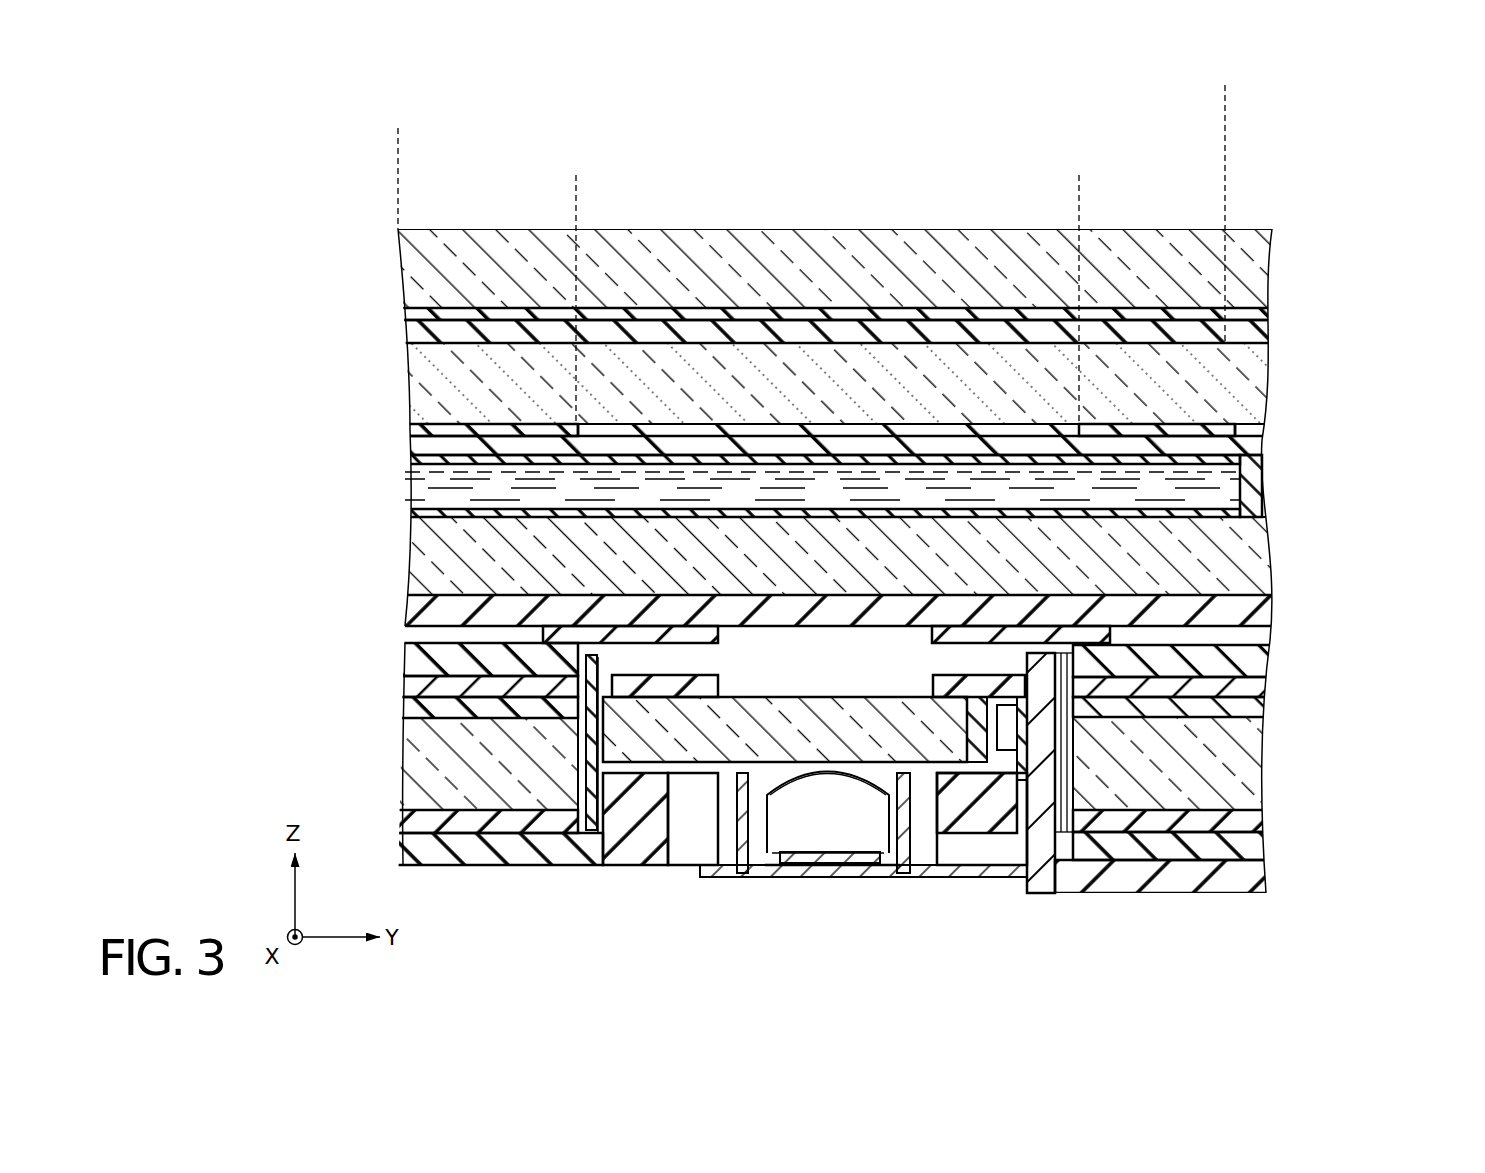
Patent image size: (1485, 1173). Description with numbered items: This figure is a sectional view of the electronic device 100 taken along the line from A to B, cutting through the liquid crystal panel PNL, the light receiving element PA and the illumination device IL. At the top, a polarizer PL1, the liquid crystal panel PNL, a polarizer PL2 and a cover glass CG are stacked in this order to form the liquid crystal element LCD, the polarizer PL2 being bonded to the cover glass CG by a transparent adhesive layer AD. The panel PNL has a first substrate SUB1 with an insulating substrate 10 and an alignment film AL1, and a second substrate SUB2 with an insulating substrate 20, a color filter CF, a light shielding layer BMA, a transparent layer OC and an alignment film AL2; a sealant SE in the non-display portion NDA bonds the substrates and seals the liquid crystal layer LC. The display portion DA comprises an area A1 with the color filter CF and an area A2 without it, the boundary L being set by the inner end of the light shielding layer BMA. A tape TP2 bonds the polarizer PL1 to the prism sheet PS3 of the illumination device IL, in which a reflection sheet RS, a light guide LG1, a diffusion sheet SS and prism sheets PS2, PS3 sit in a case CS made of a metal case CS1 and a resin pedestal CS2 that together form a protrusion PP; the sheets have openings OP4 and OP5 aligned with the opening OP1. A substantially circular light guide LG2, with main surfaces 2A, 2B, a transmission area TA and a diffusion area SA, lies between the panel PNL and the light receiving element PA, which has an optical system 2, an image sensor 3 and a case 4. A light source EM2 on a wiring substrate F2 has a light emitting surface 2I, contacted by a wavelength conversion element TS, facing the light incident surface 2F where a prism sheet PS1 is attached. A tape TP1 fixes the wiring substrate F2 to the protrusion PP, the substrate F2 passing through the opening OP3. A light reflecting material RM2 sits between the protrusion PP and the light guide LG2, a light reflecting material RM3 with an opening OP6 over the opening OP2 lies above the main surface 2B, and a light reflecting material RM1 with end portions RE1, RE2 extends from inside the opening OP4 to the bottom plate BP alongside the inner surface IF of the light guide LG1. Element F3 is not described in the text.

The electronic device 100 is at (1332, 194).
The liquid crystal element LCD is at (373, 379).
The cover glass CG is at (1256, 262).
The transparent adhesive layer AD is at (1262, 314).
The polarizer PL2 is at (1263, 332).
The insulating substrate 20 is at (1258, 382).
The color filter CF is at (410, 432).
The light shielding layer BMA is at (1250, 430).
The transparent layer OC is at (1256, 446).
The alignment film AL2 is at (1262, 462).
The liquid crystal layer LC is at (1226, 488).
The sealant SE is at (1252, 498).
The alignment film AL1 is at (1260, 513).
The insulating substrate 10 is at (1252, 575).
The polarizer PL1 is at (1266, 610).
The second substrate SUB2 is at (1374, 367).
The liquid crystal panel PNL is at (1377, 442).
The first substrate SUB1 is at (1374, 563).
The illumination device IL is at (1379, 740).
The tape TP2 is at (1112, 634).
The prism sheet PS3 is at (1262, 660).
The prism sheet PS2 is at (1262, 688).
The diffusion sheet SS is at (1262, 707).
The light guide LG1 is at (1256, 765).
The reflection sheet RS is at (1253, 822).
The case CS is at (1276, 848).
The wiring substrate F2 is at (1192, 872).
The bottom plate BP is at (462, 867).
The light guide LG2 is at (590, 812).
The light reflecting material RM3 is at (657, 688).
The opening OP4 is at (585, 670).
The opening OP5 is at (592, 733).
The opening OP1 is at (592, 820).
The main surface 2B is at (834, 692).
The diffusion area SA is at (709, 688).
The transmission area TA is at (792, 690).
The opening OP6 is at (745, 683).
The light emitting surface 2I is at (988, 718).
The light incident surface 2F is at (1000, 754).
The prism sheet PS1 is at (975, 700).
The wavelength conversion element TS is at (990, 700).
The light source EM2 is at (1020, 700).
The end portion RE1 is at (1069, 645).
The tape TP1 is at (1057, 745).
The inner surface IF is at (1068, 845).
The light reflecting material RM1 is at (1060, 800).
The end portion RE2 is at (1064, 790).
The protrusion PP is at (690, 807).
The opening OP2 is at (735, 817).
The case 4 is at (903, 825).
The light receiving element PA is at (917, 825).
The optical system 2 is at (822, 832).
The main surface 2A is at (806, 770).
The image sensor 3 is at (838, 864).
The third frame F3 is at (782, 868).
The metal case CS1 is at (942, 864).
The pedestal CS2 is at (970, 877).
The light reflecting material RM2 is at (1000, 832).
The opening OP3 is at (1041, 874).
The display portion DA is at (398, 146).
The non-display portion NDA is at (1225, 146).
The area A1 is at (398, 195).
The area A2 is at (576, 195).
The boundary L is at (1225, 89).
The line A-B endpoint A is at (406, 892).
The line A-B endpoint B is at (1261, 914).